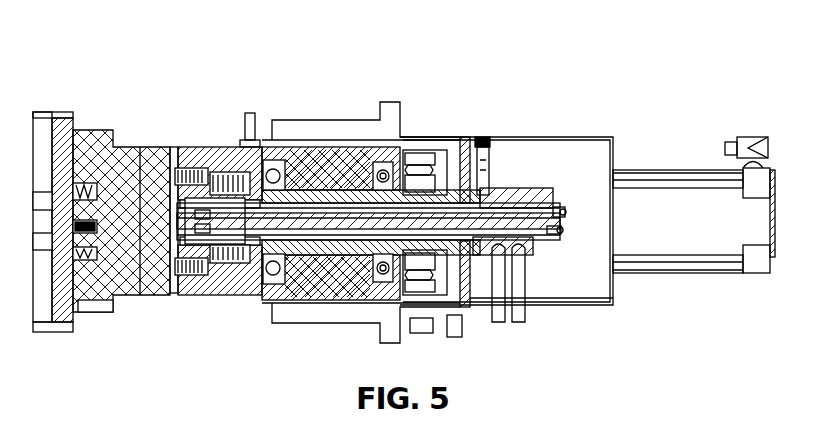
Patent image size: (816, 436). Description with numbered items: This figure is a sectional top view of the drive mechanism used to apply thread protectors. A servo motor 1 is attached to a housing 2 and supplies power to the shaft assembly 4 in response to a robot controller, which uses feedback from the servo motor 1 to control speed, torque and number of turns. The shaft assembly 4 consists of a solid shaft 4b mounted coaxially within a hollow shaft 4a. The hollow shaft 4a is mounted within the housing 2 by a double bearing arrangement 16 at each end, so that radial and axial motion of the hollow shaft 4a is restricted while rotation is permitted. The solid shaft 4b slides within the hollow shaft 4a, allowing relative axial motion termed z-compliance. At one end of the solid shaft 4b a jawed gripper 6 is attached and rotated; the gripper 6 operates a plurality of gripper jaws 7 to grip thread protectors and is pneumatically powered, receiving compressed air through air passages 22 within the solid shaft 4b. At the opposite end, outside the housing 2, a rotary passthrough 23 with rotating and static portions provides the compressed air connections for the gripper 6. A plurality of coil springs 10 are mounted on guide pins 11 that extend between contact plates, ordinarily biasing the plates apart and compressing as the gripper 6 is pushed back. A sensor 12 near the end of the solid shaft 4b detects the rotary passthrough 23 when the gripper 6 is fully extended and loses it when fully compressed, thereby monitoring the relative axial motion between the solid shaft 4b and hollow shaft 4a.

The servo motor 1 is at (682, 262).
The housing 2 is at (598, 138).
The shaft assembly 4 is at (430, 253).
The hollow shaft 4a is at (310, 250).
The solid shaft 4b is at (257, 235).
The jawed gripper 6 is at (95, 155).
The gripper jaws 7 is at (42, 118).
The coil springs 10 is at (195, 173).
The guide pins 11 is at (222, 173).
The sensor 12 is at (480, 140).
The double bearing arrangement 16 is at (273, 168).
The air passages 22 is at (530, 213).
The rotary passthrough 23 is at (528, 188).